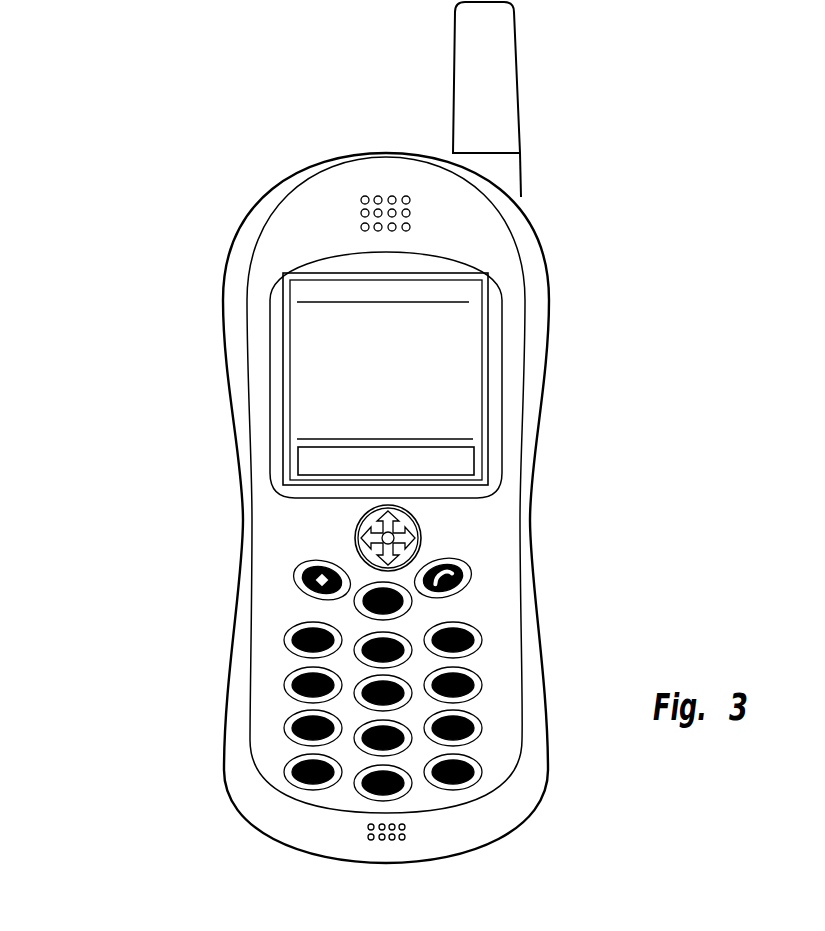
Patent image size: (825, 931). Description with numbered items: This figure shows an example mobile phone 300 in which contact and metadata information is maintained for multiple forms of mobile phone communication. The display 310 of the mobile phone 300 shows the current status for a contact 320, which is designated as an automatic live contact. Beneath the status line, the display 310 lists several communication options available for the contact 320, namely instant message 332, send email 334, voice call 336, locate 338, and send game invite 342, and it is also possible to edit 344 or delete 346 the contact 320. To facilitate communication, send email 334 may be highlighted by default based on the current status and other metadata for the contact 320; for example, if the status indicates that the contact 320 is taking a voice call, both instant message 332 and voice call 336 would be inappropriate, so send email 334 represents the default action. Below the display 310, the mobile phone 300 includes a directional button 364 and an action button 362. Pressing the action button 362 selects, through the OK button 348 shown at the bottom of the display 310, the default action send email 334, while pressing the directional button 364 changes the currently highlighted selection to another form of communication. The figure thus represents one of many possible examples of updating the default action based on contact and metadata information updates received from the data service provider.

The mobile phone 300 is at (604, 199).
The display 310 is at (246, 382).
The contact 320 is at (295, 292).
The instant message 332 is at (455, 311).
The send email 334 is at (295, 330).
The voice call 336 is at (392, 351).
The locate 338 is at (295, 368).
The send game invite 342 is at (460, 392).
The edit 344 is at (295, 409).
The delete 346 is at (295, 428).
The OK button 348 is at (465, 459).
The action button 362 is at (412, 525).
The directional button 364 is at (422, 548).